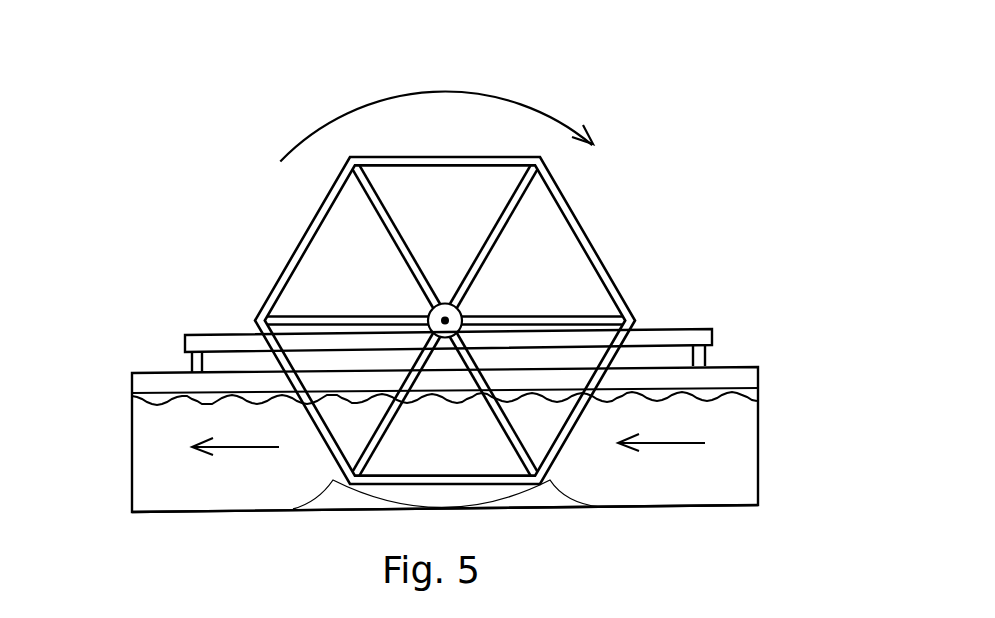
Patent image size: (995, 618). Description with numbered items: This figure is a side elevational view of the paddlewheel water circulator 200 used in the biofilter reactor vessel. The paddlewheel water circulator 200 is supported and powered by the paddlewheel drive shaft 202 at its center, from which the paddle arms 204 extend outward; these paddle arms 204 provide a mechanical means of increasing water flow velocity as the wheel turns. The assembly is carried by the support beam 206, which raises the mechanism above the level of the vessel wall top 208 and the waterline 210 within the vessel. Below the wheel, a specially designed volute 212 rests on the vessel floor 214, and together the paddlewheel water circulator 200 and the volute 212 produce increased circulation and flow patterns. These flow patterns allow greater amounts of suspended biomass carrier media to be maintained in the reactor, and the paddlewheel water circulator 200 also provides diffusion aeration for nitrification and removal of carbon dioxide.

The paddlewheel water circulator 200 is at (225, 134).
The paddlewheel drive shaft 202 is at (458, 312).
The paddle arms 204 is at (512, 210).
The support beam 206 is at (232, 335).
The vessel wall top 208 is at (155, 373).
The waterline 210 is at (753, 392).
The volute 212 is at (523, 500).
The vessel floor 214 is at (187, 510).